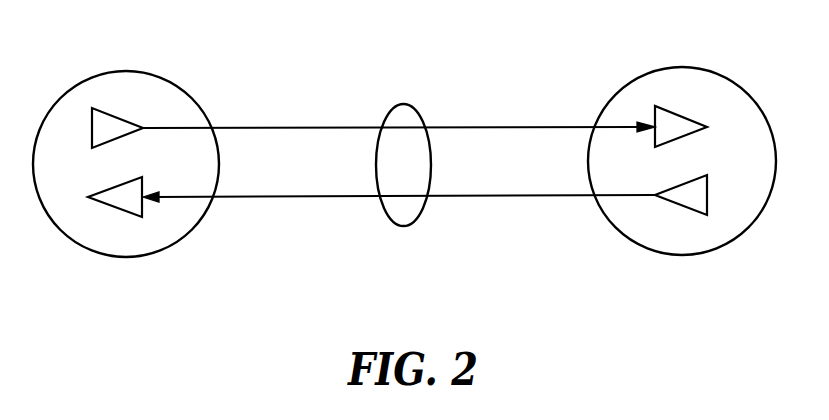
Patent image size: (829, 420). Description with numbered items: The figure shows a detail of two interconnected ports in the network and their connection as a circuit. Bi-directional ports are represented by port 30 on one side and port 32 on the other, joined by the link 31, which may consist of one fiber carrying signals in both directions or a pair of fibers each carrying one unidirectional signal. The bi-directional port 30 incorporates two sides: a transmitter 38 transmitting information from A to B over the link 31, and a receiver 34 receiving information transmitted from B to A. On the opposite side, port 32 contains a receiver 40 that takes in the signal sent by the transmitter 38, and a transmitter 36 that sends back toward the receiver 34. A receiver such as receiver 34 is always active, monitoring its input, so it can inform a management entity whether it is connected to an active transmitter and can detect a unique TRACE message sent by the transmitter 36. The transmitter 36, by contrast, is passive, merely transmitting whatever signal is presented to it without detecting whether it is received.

The bi-directional port 30 is at (190, 230).
The link 31 is at (390, 222).
The bi-directional port 32 is at (636, 243).
The receiver 34 is at (140, 217).
The transmitter 36 is at (708, 215).
The transmitter 38 is at (108, 112).
The receiver 40 is at (660, 106).